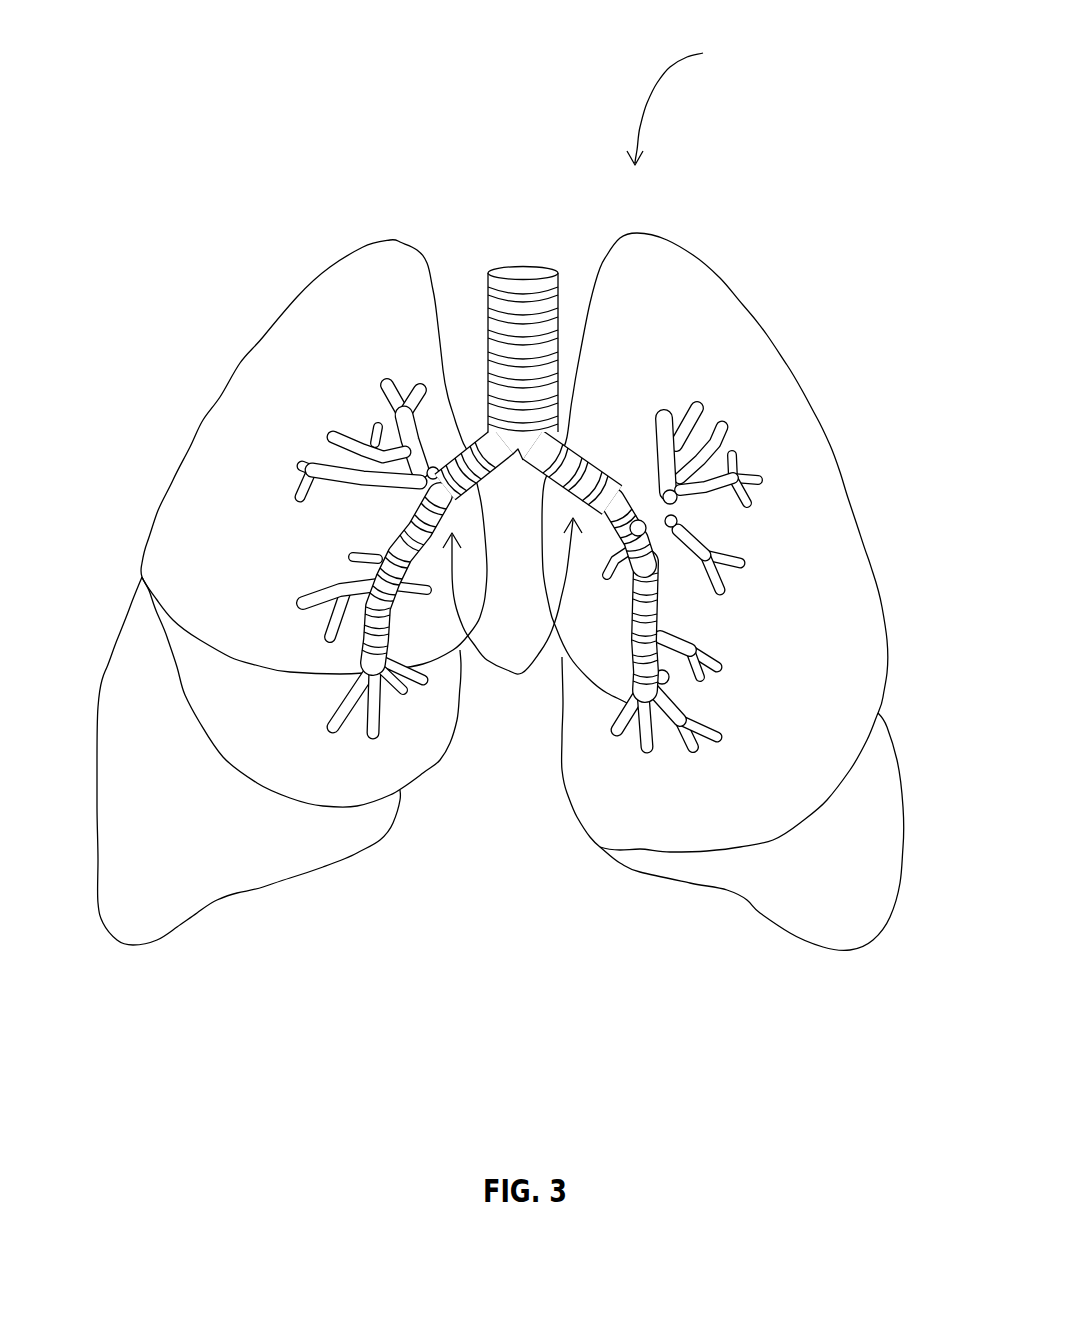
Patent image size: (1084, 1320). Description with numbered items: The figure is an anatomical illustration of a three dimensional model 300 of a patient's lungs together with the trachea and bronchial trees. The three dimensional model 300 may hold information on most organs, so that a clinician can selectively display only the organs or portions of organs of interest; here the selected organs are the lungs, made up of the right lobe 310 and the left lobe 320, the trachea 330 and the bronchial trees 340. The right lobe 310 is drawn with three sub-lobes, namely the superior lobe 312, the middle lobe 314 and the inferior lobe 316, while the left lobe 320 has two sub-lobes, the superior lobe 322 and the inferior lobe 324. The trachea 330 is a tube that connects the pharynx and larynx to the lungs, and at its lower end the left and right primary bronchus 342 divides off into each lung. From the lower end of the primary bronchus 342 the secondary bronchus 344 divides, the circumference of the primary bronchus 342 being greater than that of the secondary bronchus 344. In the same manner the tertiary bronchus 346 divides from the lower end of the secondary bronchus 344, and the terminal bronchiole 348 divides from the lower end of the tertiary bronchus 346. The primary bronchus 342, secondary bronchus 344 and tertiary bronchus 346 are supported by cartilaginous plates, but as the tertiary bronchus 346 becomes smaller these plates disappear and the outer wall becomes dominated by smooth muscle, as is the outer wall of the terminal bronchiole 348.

The 3D model 300 is at (693, 98).
The right lobe 310 is at (292, 592).
The superior lobe 312 is at (253, 532).
The middle lobe 314 is at (286, 730).
The inferior lobe 316 is at (171, 850).
The left lobe 320 is at (723, 591).
The superior lobe 322 is at (698, 343).
The inferior lobe 324 is at (833, 881).
The trachea 330 is at (538, 265).
The bronchial trees 340 is at (512, 615).
The primary bronchus 342 is at (570, 447).
The secondary bronchus 344 is at (659, 583).
The tertiary bronchus 346 is at (669, 677).
The terminal bronchiole 348 is at (710, 732).